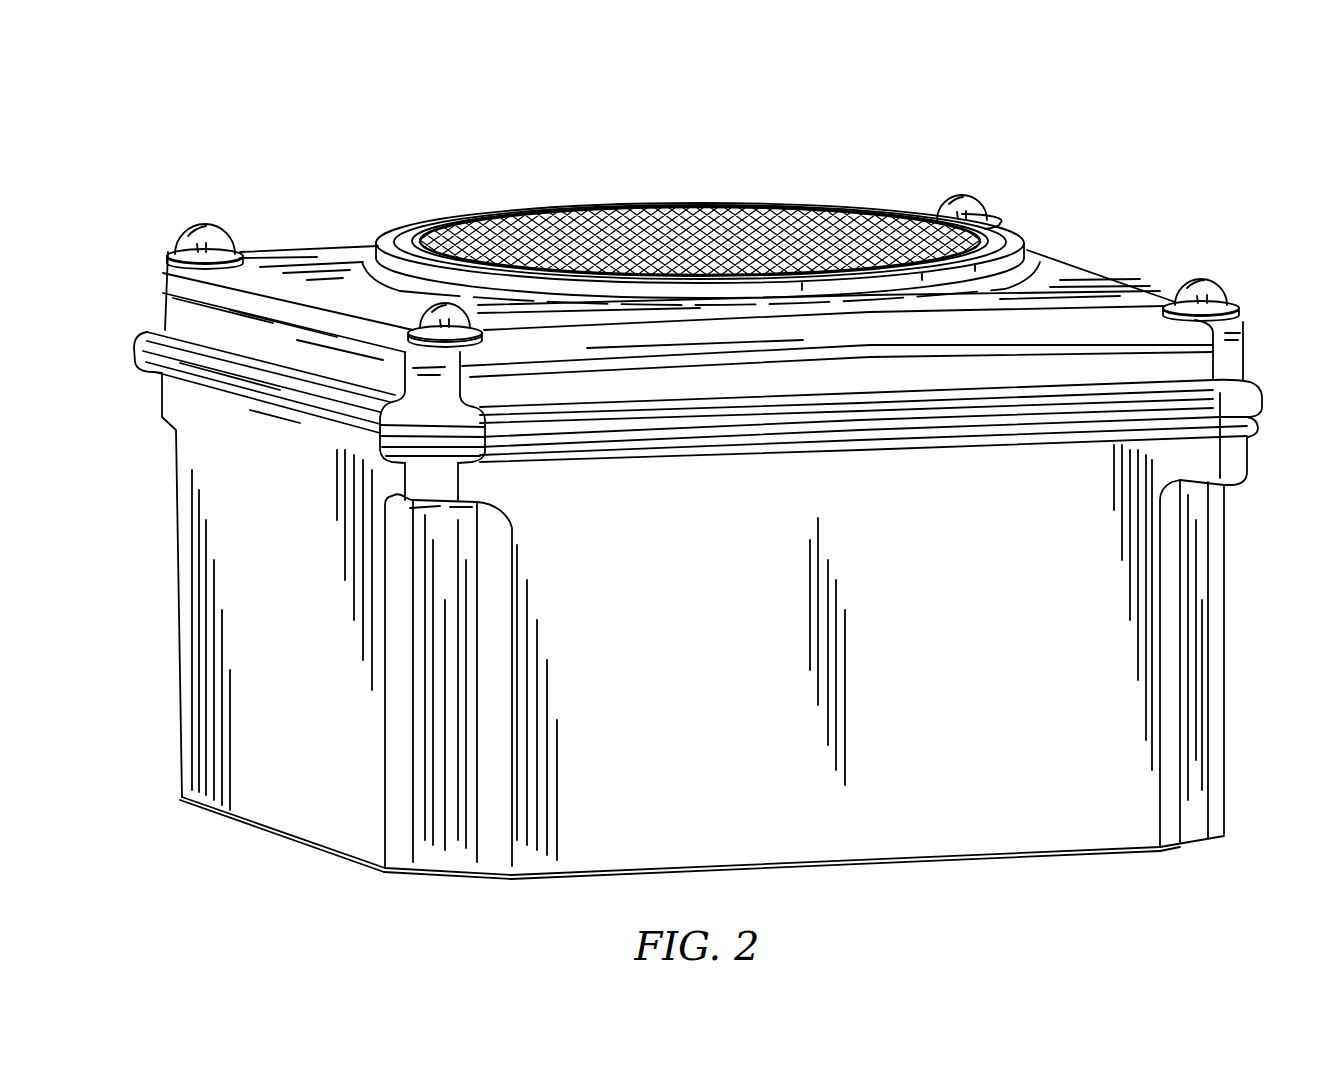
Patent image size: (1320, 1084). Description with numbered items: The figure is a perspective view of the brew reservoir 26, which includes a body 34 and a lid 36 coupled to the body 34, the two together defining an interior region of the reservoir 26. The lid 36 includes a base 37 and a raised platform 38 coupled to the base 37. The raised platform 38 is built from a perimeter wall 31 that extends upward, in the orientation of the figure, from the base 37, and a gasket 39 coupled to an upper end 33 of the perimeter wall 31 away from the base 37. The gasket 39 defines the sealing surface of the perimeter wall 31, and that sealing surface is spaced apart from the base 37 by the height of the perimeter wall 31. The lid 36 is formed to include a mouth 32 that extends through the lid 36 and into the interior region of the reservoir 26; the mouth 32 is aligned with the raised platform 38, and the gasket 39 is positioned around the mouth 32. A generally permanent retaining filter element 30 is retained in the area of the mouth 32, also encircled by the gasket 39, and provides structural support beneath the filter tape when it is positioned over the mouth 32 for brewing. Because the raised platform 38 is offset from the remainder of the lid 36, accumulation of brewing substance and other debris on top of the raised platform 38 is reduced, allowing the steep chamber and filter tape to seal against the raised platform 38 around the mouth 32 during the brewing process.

The reservoir 26 is at (1181, 135).
The permanent retaining filter element 30 is at (845, 227).
The perimeter wall 31 is at (378, 252).
The mouth 32 is at (777, 238).
The upper end 33 is at (387, 236).
The body 34 is at (320, 778).
The lid 36 is at (278, 244).
The base 37 is at (1083, 292).
The raised platform 38 is at (1040, 250).
The gasket 39 is at (416, 236).